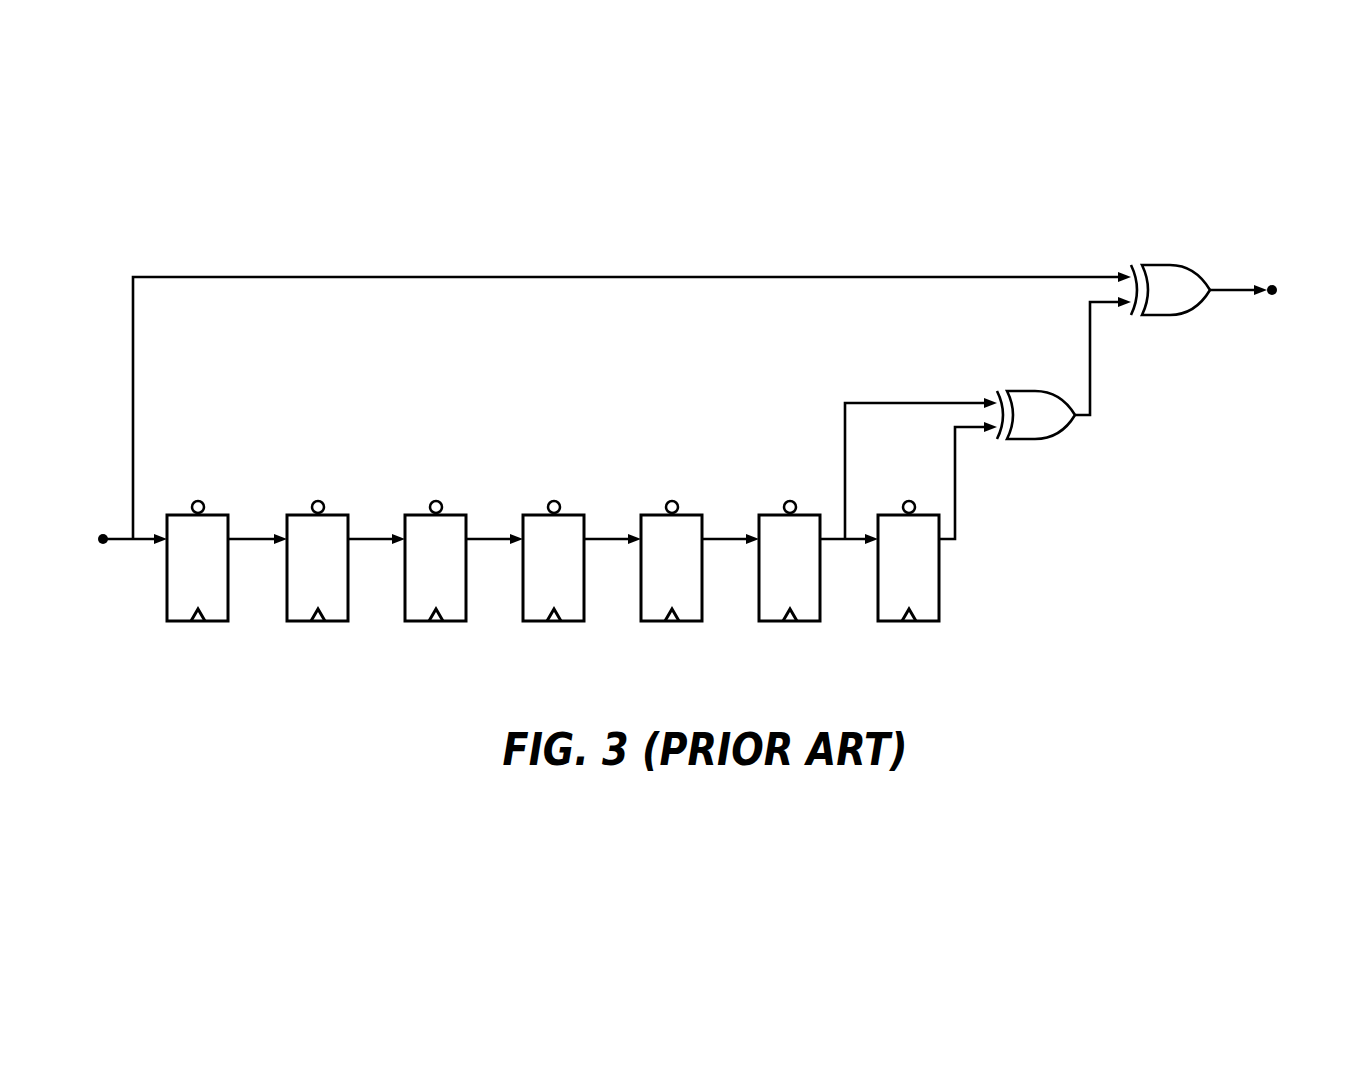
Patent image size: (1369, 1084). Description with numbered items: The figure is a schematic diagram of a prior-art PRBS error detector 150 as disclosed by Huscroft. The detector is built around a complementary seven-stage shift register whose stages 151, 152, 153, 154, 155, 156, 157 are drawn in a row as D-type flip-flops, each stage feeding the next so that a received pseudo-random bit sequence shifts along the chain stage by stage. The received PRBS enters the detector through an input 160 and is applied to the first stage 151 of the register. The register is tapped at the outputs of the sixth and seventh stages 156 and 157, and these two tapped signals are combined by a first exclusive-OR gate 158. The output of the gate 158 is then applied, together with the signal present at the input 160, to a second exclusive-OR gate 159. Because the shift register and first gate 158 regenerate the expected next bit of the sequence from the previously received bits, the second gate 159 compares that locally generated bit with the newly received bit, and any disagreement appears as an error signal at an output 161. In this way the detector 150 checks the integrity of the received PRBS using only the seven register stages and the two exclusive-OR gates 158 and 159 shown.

The PRBS error detector 150 is at (648, 256).
The first stage of shift register 151 is at (180, 616).
The second stage of shift register 152 is at (300, 616).
The third stage of shift register 153 is at (418, 616).
The fourth stage of shift register 154 is at (536, 616).
The fifth stage of shift register 155 is at (654, 616).
The sixth stage of shift register 156 is at (772, 616).
The seventh stage of shift register 157 is at (897, 616).
The first exclusive-OR gate 158 is at (1035, 430).
The second exclusive-OR gate 159 is at (1172, 305).
The input 160 is at (103, 545).
The output 161 is at (1271, 297).